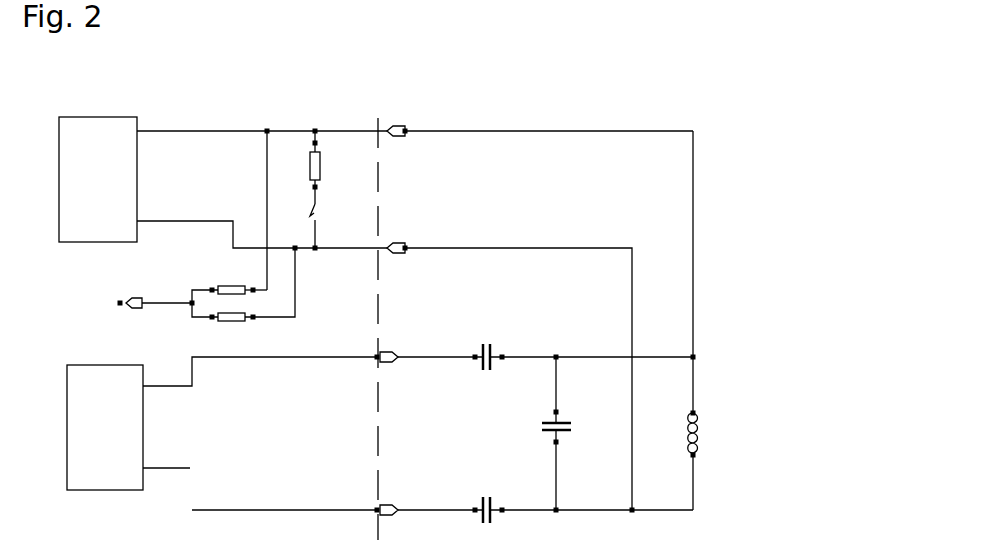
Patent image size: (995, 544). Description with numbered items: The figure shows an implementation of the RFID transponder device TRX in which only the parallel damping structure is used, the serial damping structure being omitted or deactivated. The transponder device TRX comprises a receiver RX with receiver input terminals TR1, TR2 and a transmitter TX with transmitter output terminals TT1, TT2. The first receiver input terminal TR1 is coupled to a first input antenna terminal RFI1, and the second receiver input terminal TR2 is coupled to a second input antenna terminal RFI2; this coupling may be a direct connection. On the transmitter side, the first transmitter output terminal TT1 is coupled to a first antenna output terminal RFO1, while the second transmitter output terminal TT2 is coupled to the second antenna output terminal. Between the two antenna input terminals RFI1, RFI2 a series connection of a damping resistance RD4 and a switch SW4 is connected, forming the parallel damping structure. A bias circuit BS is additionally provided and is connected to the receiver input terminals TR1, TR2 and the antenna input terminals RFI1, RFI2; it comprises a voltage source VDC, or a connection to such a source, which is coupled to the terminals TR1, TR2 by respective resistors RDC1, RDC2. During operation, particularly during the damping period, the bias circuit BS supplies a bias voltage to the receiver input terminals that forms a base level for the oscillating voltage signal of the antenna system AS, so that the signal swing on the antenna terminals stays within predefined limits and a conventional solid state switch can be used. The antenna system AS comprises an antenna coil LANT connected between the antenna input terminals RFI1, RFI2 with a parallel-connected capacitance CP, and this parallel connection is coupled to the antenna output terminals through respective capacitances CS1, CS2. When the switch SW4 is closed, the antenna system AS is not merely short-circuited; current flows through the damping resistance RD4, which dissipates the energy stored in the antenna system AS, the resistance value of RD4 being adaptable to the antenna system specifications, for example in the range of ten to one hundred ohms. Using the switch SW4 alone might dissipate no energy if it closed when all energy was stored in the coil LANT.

The RFID transponder device TRX is at (376, 78).
The receiver RX is at (98, 179).
The transmitter TX is at (105, 427).
The first receiver input terminal TR1 is at (137, 140).
The second receiver input terminal TR2 is at (137, 210).
The damping resistance RD4 is at (310, 168).
The switch SW4 is at (308, 216).
The first input antenna terminal RFI1 is at (539, 144).
The second input antenna terminal RFI2 is at (510, 366).
The voltage source VDC is at (156, 292).
The resistor RDC1 is at (229, 281).
The resistor RDC2 is at (245, 299).
The bias circuit BS is at (140, 321).
The first transmitter output terminal TT1 is at (143, 386).
The second transmitter output terminal TT2 is at (143, 468).
The first antenna output terminal RFO1 is at (337, 424).
The capacitance CS1 is at (584, 351).
The capacitance CS2 is at (583, 503).
The capacitance CP is at (567, 434).
The antenna coil LANT is at (724, 433).
The antenna system AS is at (758, 340).